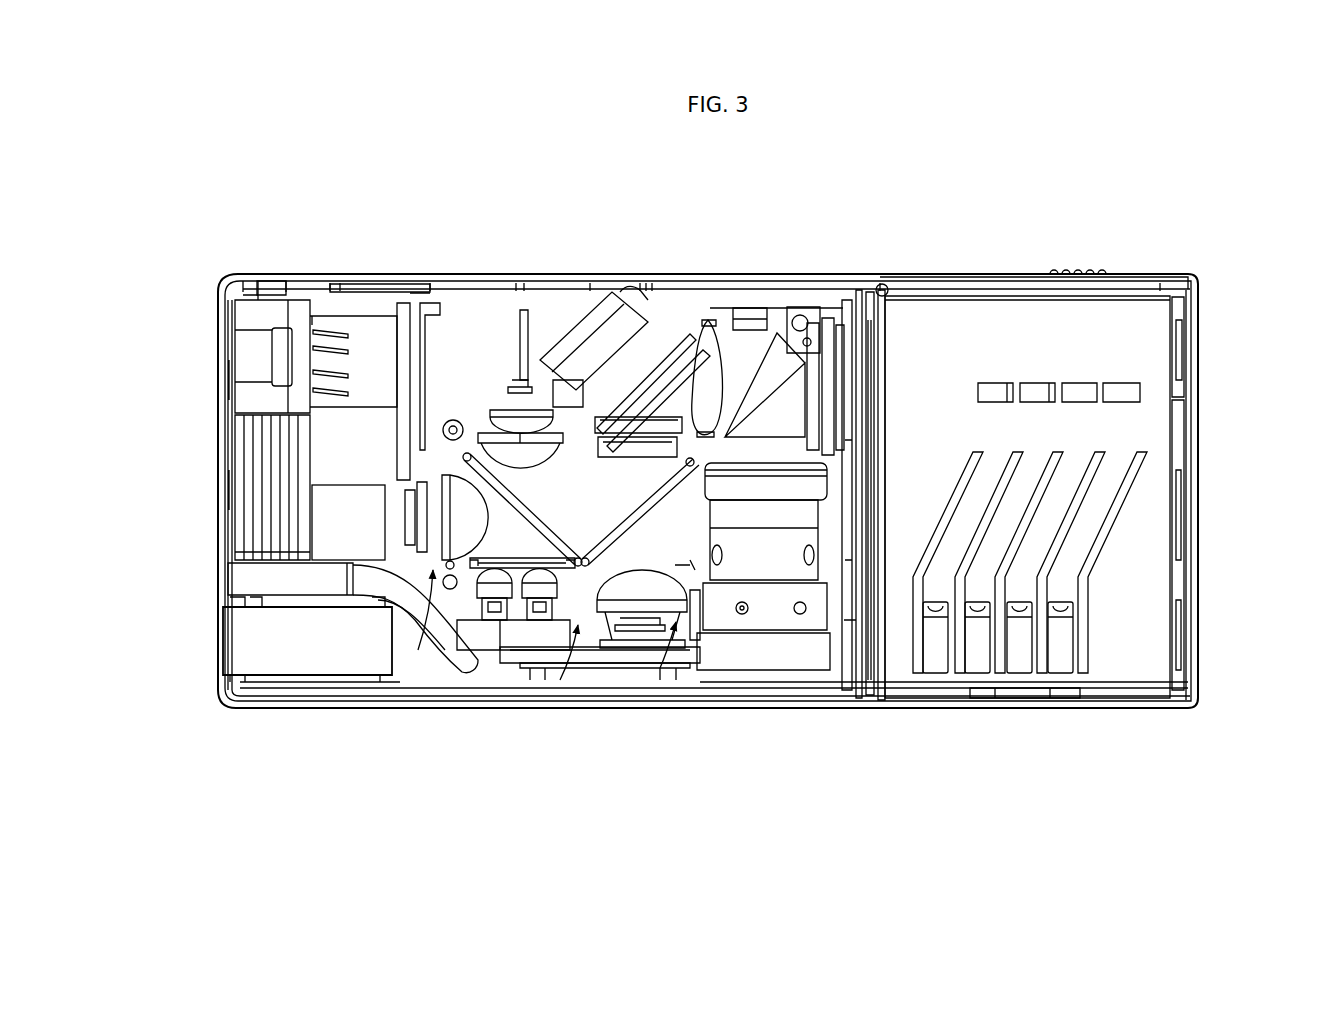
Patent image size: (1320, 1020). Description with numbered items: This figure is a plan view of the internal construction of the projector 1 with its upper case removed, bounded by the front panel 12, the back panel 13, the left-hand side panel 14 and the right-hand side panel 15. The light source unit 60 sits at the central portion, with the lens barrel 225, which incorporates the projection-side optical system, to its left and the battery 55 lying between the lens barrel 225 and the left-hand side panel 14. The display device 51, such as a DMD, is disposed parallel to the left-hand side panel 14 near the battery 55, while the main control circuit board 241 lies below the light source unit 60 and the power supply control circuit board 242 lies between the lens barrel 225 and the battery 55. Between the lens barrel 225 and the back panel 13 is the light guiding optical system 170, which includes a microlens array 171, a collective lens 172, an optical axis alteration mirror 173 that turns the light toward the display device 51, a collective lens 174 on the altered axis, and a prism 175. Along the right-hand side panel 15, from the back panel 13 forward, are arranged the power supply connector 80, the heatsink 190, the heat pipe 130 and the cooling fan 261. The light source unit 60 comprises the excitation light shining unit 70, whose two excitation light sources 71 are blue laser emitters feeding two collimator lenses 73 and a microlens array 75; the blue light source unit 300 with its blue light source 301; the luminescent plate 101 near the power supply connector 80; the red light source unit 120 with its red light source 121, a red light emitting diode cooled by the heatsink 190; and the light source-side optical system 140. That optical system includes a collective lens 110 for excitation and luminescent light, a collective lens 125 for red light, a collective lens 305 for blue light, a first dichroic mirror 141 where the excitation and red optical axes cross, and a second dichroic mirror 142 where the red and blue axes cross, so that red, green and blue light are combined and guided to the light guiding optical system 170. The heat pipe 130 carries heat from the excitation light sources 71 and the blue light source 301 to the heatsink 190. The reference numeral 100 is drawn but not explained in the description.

The projector 1 is at (1175, 246).
The front panel 12 is at (308, 702).
The back panel 13 is at (283, 274).
The left-hand side panel 14 is at (1200, 362).
The right-hand side panel 15 is at (222, 440).
The display device 51 is at (880, 298).
The battery 55 is at (1098, 325).
The light source unit 60 is at (604, 640).
The excitation light shining unit 70 is at (472, 652).
The excitation light source 71 is at (494, 622).
The collimator lens 73 is at (497, 572).
The microlens array 75 is at (543, 556).
The power supply connector 80 is at (250, 320).
The light source 100 is at (506, 378).
The luminescent plate 101 is at (524, 312).
The collective lens 110 is at (537, 403).
The red light source unit 120 is at (388, 518).
The red light source 121 is at (408, 482).
The collective lens 125 is at (376, 670).
The heat pipe 130 is at (246, 580).
The light source-side optical system 140 is at (560, 647).
The first dichroic mirror 141 is at (522, 505).
The second dichroic mirror 142 is at (648, 502).
The light guiding optical system 170 is at (714, 345).
The microlens array 171 is at (603, 322).
The collective lens 172 is at (655, 417).
The optical axis alteration mirror 173 is at (664, 346).
The collective lens 174 is at (780, 358).
The prism 175 is at (822, 320).
The heatsink 190 is at (255, 440).
The lens barrel 225 is at (787, 640).
The main control circuit board 241 is at (725, 655).
The power supply control circuit board 242 is at (873, 603).
The cooling fan 261 is at (248, 650).
The blue light source unit 300 is at (650, 632).
The blue light source 301 is at (652, 650).
The collective lens 305 is at (692, 592).